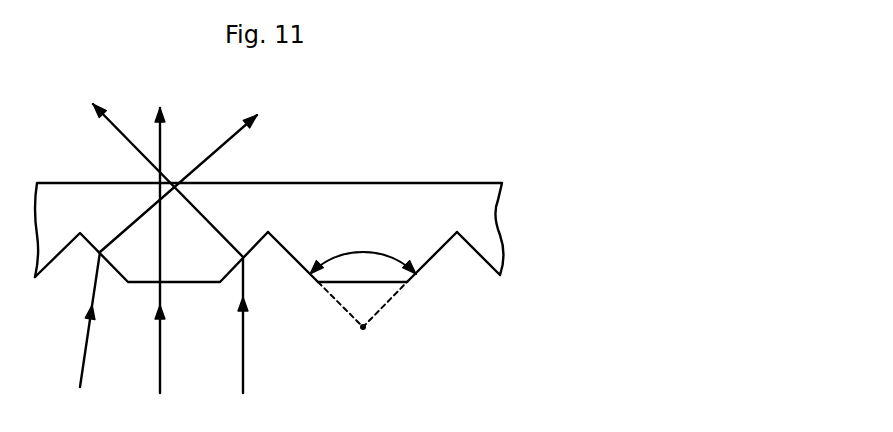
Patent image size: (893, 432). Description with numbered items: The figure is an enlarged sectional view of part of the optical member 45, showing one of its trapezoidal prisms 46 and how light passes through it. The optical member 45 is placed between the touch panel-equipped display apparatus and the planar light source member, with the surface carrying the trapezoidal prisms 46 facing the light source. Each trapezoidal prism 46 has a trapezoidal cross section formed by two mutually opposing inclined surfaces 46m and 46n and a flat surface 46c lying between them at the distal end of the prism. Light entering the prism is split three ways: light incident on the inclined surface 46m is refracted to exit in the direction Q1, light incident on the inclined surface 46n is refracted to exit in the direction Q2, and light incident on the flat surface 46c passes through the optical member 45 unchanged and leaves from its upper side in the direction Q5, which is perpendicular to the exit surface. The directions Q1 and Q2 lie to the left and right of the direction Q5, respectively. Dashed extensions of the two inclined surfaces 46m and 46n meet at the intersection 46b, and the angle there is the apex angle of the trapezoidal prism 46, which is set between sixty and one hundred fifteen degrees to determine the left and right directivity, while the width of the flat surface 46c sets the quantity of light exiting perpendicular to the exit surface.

The optical member 45 is at (498, 200).
The trapezoidal prism 46 is at (377, 246).
The inclined surface 46n is at (297, 264).
The inclined surface 46m is at (424, 266).
The flat surface 46c is at (373, 283).
The intersection 46b is at (363, 327).
The direction Q1 is at (157, 167).
The direction Q2 is at (192, 172).
The direction Q5 is at (167, 236).